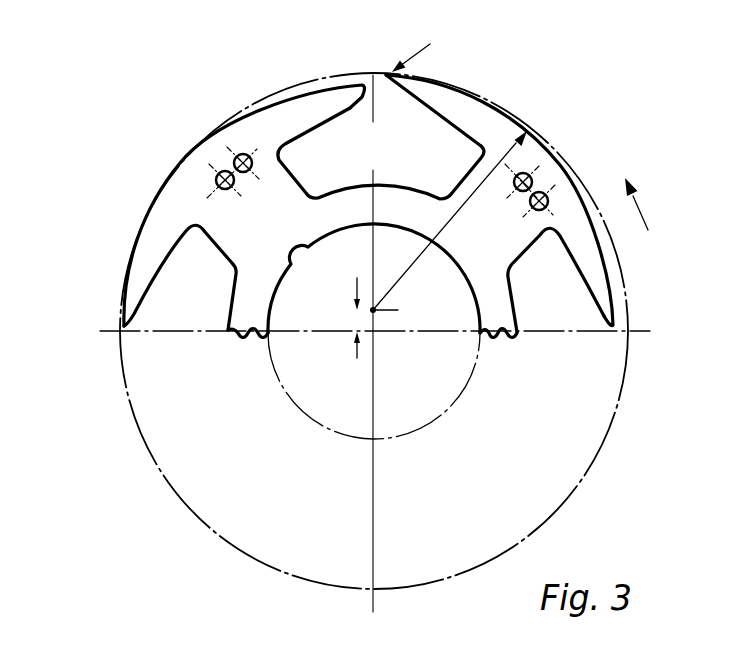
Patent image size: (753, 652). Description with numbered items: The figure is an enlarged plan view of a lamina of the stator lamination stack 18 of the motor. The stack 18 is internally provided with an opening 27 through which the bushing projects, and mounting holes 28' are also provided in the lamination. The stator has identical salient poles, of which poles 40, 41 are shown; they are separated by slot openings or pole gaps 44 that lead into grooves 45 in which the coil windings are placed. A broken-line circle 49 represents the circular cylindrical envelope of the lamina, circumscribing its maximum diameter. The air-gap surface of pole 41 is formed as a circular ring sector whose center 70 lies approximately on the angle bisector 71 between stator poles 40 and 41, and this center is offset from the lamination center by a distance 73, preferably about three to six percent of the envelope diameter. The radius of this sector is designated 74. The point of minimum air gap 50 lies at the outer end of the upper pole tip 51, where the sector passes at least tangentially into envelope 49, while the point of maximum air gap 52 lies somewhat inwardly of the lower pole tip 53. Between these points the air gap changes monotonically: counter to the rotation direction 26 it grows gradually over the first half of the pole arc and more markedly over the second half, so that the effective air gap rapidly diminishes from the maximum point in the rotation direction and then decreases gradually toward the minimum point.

The stator lamination stack 18 is at (284, 239).
The direction of rotation arrow 26 is at (638, 207).
The opening 27 is at (445, 252).
The mounting holes 28' is at (414, 176).
The pole 40 is at (186, 190).
The pole 41 is at (497, 122).
The slot openings or pole gaps 44 is at (373, 72).
The grooves 45 is at (400, 165).
The circle 49 is at (284, 91).
The point of minimum air gap 50 is at (425, 48).
The upper pole tip 51 is at (413, 87).
The point of maximum air gap 52 is at (620, 299).
The lower pole tip 53 is at (590, 296).
The center of the circle 70 is at (374, 307).
The angle bisector 71 is at (375, 510).
The distance 73 is at (355, 316).
The radius 74 is at (448, 222).